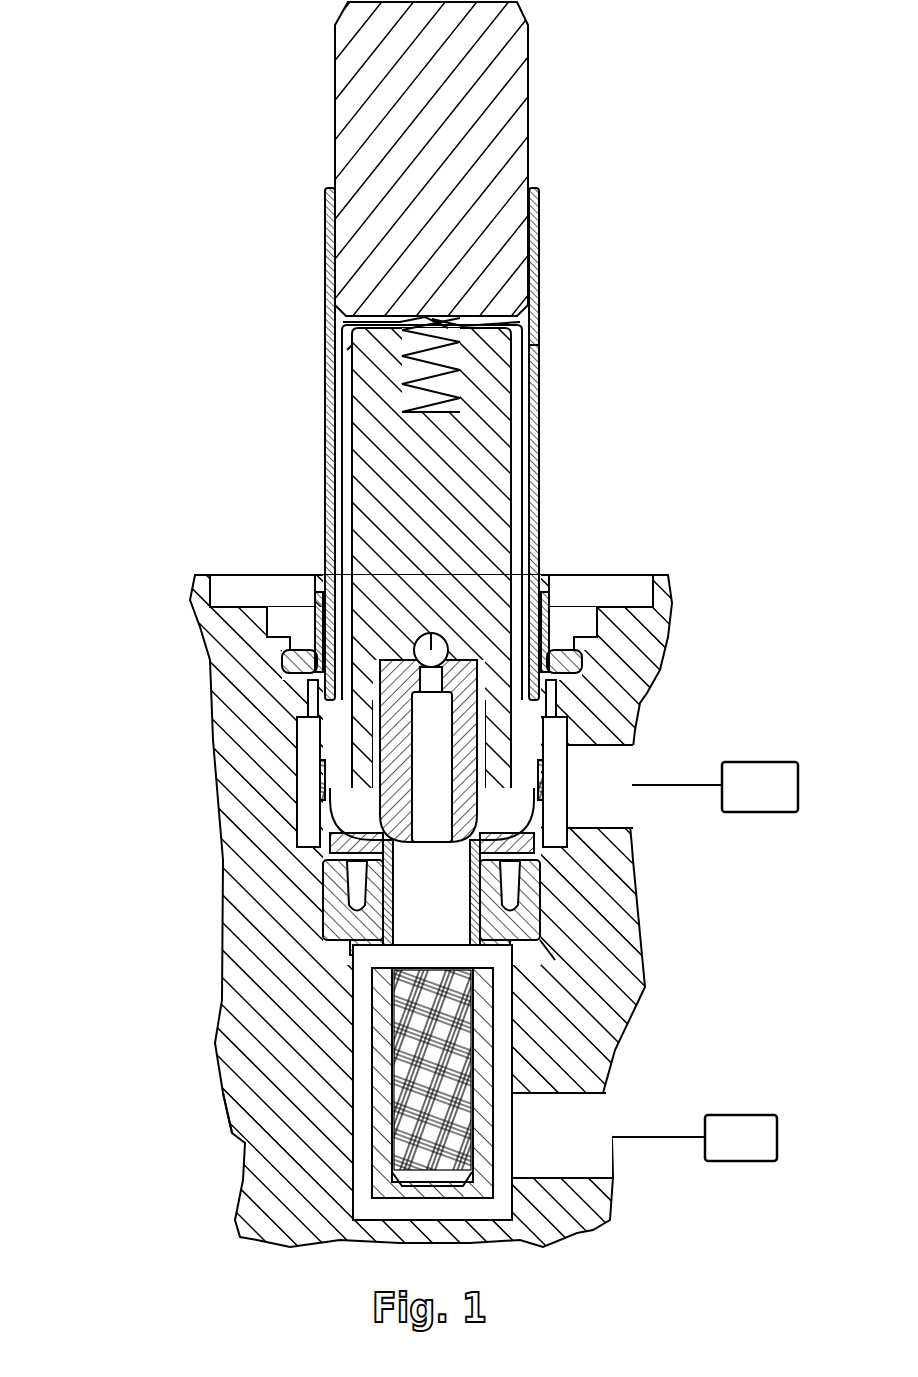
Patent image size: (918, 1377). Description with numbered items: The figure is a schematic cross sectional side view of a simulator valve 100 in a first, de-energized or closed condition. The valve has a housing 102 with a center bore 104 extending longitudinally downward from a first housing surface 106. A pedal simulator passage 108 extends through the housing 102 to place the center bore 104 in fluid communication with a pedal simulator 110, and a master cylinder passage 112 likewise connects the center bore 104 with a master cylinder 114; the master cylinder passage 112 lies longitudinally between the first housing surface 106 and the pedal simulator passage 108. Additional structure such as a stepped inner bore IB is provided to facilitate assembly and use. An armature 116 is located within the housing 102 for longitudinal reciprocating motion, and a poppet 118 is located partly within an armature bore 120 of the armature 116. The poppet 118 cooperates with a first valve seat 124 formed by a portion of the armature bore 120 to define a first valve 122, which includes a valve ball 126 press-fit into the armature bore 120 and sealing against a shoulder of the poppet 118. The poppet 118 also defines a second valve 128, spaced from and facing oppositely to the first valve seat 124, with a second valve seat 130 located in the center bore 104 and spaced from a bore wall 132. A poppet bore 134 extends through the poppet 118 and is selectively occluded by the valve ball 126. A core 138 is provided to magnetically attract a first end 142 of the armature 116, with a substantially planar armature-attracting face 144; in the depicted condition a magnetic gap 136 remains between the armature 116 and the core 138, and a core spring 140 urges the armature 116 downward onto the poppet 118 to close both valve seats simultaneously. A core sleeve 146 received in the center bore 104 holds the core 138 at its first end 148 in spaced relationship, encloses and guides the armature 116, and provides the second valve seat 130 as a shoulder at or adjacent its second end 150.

The simulator valve 100 is at (268, 88).
The housing 102 is at (287, 1000).
The center bore 104 is at (387, 1207).
The first housing surface 106 is at (655, 600).
The pedal simulator passage 108 is at (562, 1135).
The pedal simulator 110 is at (694, 1138).
The master cylinder passage 112 is at (602, 786).
The master cylinder 114 is at (715, 787).
The armature 116 is at (462, 478).
The poppet 118 is at (405, 800).
The armature bore 120 is at (350, 652).
The first valve 122 is at (416, 622).
The first valve seat 124 is at (468, 632).
The valve ball 126 is at (396, 628).
The second valve 128 is at (356, 850).
The second valve seat 130 is at (490, 890).
The bore wall 132 is at (206, 1135).
The poppet bore 134 is at (560, 710).
The magnetic gap 136 is at (520, 323).
The core 138 is at (455, 98).
The core spring 140 is at (432, 360).
The first end 142 is at (554, 343).
The armature-attracting face 144 is at (347, 350).
The core sleeve 146 is at (533, 270).
The first end 148 is at (553, 180).
The second end 150 is at (553, 882).
The stepped inner bore IB is at (577, 597).